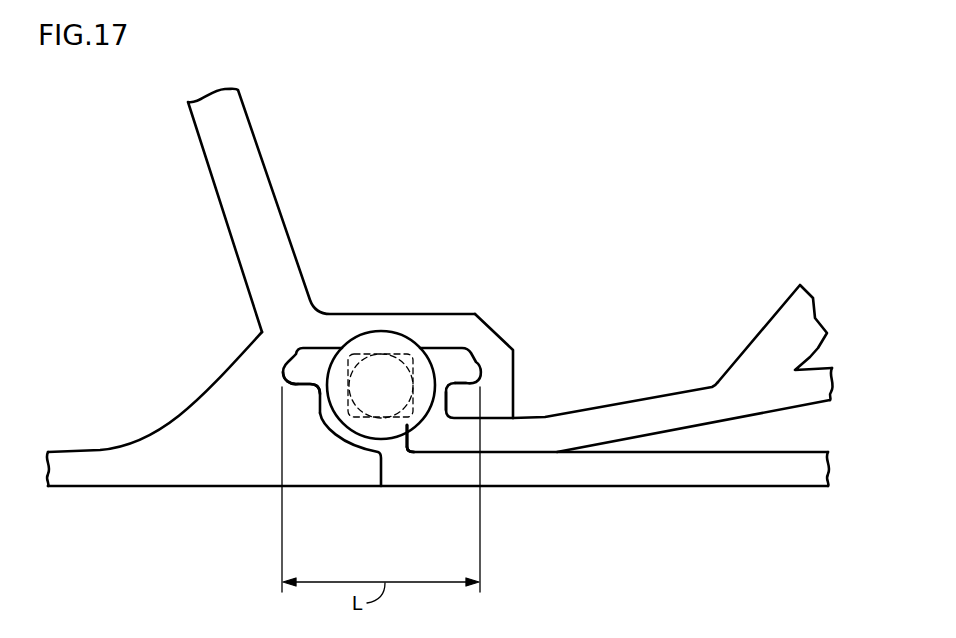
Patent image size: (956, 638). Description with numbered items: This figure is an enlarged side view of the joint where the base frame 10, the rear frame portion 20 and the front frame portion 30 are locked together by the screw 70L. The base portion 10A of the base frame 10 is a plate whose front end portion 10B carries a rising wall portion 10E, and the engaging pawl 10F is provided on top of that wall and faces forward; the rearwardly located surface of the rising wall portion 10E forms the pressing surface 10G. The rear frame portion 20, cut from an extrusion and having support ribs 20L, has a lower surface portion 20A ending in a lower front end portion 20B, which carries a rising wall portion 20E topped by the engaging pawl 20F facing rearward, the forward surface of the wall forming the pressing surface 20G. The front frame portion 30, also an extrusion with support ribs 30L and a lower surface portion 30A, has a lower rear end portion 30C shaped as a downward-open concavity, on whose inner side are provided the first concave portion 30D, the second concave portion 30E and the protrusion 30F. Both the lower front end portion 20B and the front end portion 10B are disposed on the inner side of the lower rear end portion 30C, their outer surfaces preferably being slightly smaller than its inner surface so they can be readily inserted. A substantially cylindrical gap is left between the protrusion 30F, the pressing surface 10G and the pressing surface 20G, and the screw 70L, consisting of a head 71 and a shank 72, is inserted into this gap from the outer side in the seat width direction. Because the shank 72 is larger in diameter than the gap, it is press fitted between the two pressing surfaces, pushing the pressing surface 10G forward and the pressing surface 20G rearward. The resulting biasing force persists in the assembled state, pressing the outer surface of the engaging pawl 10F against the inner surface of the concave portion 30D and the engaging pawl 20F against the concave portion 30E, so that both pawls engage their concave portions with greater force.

The base frame 10 is at (568, 487).
The base portion 10A is at (650, 468).
The front end portion 10B is at (285, 533).
The rising wall portion 10E is at (338, 437).
The engaging pawl 10F is at (299, 372).
The pressing surface 10G is at (386, 400).
The rear frame portion 20 is at (685, 388).
The lower surface portion 20A is at (638, 417).
The lower front end portion 20B is at (403, 255).
The rising wall portion 20E is at (438, 402).
The engaging pawl 20F is at (458, 366).
The pressing surface 20G is at (386, 353).
The support ribs 20L is at (773, 349).
The front frame portion 30 is at (157, 487).
The lower surface portion 30A is at (69, 468).
The lower rear end portion 30C is at (497, 334).
The concave portion 30D is at (297, 354).
The concave portion 30E is at (472, 364).
The protrusion 30F is at (390, 357).
The support ribs 30L is at (247, 203).
The screw 70L is at (470, 533).
The head 71 is at (428, 422).
The shank 72 is at (417, 420).